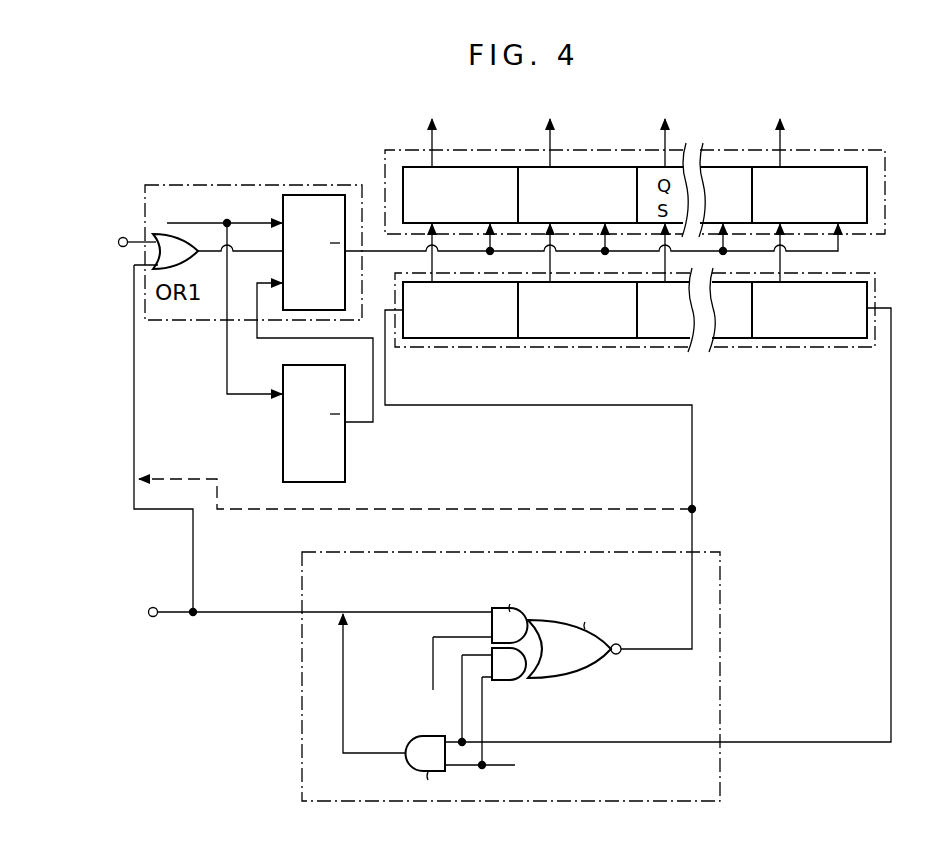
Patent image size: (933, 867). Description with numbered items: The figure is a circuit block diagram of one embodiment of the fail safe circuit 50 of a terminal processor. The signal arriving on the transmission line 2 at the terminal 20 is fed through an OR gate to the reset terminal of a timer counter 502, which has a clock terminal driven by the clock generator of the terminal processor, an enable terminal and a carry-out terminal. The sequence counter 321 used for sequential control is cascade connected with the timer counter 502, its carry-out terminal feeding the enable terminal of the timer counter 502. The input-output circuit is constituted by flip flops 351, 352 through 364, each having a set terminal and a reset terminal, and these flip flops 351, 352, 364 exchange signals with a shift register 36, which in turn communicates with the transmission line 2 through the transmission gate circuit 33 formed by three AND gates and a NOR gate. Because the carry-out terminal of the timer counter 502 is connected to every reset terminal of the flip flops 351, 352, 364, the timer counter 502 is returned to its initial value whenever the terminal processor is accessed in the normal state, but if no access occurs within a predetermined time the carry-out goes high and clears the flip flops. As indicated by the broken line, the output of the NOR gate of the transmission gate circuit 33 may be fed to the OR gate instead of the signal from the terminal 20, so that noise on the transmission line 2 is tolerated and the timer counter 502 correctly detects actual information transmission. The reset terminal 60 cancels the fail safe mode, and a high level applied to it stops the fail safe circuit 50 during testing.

The fail safe circuit 50 is at (227, 185).
The timer counter 502 is at (321, 195).
The reset terminal 60 is at (119, 240).
The sequence counter 321 is at (345, 462).
The flip flop 351 is at (478, 167).
The flip flop 352 is at (612, 167).
The flip flop 364 is at (834, 167).
The shift register 36 is at (481, 347).
The terminal 20 is at (168, 599).
The transmission line 2 is at (243, 612).
The transmission gate circuit 33 is at (720, 619).